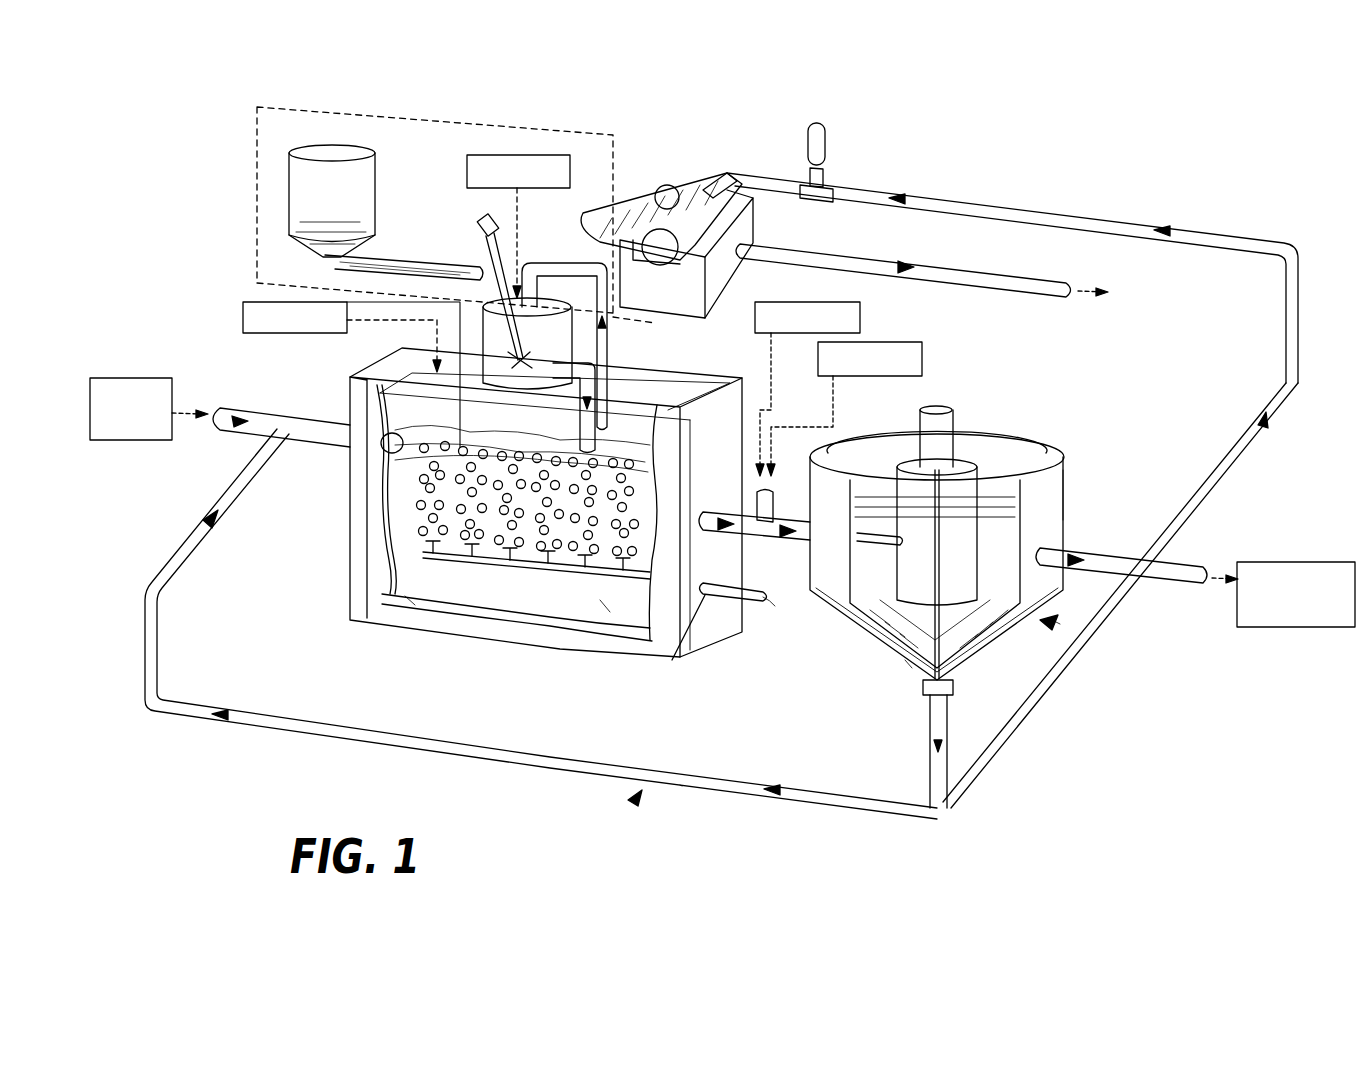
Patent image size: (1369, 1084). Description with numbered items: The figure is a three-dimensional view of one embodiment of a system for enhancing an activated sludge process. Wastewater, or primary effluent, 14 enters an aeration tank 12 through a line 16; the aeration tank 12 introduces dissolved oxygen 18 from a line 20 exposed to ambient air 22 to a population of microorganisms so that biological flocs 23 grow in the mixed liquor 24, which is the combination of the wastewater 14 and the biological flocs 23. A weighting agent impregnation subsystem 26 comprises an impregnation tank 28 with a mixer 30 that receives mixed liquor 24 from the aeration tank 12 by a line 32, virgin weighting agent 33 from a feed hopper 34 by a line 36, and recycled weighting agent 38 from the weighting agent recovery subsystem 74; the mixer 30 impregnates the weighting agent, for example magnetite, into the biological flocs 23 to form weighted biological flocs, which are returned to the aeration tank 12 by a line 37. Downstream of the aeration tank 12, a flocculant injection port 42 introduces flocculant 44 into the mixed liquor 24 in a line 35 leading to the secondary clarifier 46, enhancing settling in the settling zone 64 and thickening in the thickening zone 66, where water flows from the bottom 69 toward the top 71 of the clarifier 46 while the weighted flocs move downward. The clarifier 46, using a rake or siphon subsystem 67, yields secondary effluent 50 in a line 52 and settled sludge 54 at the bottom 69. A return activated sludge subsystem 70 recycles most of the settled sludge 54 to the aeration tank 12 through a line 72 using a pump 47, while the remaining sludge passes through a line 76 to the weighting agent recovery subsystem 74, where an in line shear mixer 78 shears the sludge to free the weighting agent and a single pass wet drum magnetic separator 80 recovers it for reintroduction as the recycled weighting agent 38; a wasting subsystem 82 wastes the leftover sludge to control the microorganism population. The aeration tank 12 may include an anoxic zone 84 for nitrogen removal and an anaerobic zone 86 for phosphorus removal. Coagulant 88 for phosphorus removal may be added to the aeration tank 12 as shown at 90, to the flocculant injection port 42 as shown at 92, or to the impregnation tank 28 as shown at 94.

The aeration tank 12 is at (665, 652).
The wastewater 14 is at (125, 378).
The line 16 is at (242, 441).
The dissolved oxygen 18 is at (425, 530).
The line 20 is at (718, 598).
The ambient air 22 is at (770, 605).
The biological flocs 23 is at (395, 478).
The mixed liquor 24 is at (403, 373).
The weighting agent impregnation subsystem 26 is at (456, 215).
The impregnation tank 28 is at (527, 343).
The mixer 30 is at (490, 255).
The line 32 is at (608, 342).
The virgin weighting agent 33 is at (485, 295).
The feed hopper 34 is at (332, 201).
The line 35 is at (780, 542).
The line 36 is at (390, 262).
The line 37 is at (632, 370).
The recycled weighting agent 38 is at (603, 228).
The flocculant injection port 42 is at (773, 496).
The flocculant 44 is at (860, 318).
The secondary clarifier 46 is at (1065, 470).
The pump 47 is at (949, 698).
The secondary effluent 50 is at (1280, 562).
The line 52 is at (1176, 584).
The settled sludge 54 is at (990, 628).
The settling zone 64 is at (1057, 520).
The thickening zone 66 is at (1057, 624).
The rake or siphon subsystem 67 is at (905, 665).
The bottom 69 is at (956, 684).
The return activated sludge subsystem 70 is at (630, 800).
The top 71 is at (1000, 437).
The line 72 is at (680, 784).
The weighting agent recovery subsystem 74 is at (1144, 198).
The line 76 is at (1240, 445).
The in line shear mixer 78 is at (826, 136).
The single pass wet drum magnetic separator 80 is at (750, 228).
The wasting subsystem 82 is at (928, 262).
The anoxic zone 84 is at (415, 596).
The anaerobic zone 86 is at (605, 608).
The coagulant 88 is at (500, 155).
The coagulant addition to aeration tank 90 is at (373, 322).
The coagulant addition to flocculant injection port 92 is at (836, 404).
The coagulant addition to impregnation tank 94 is at (517, 218).